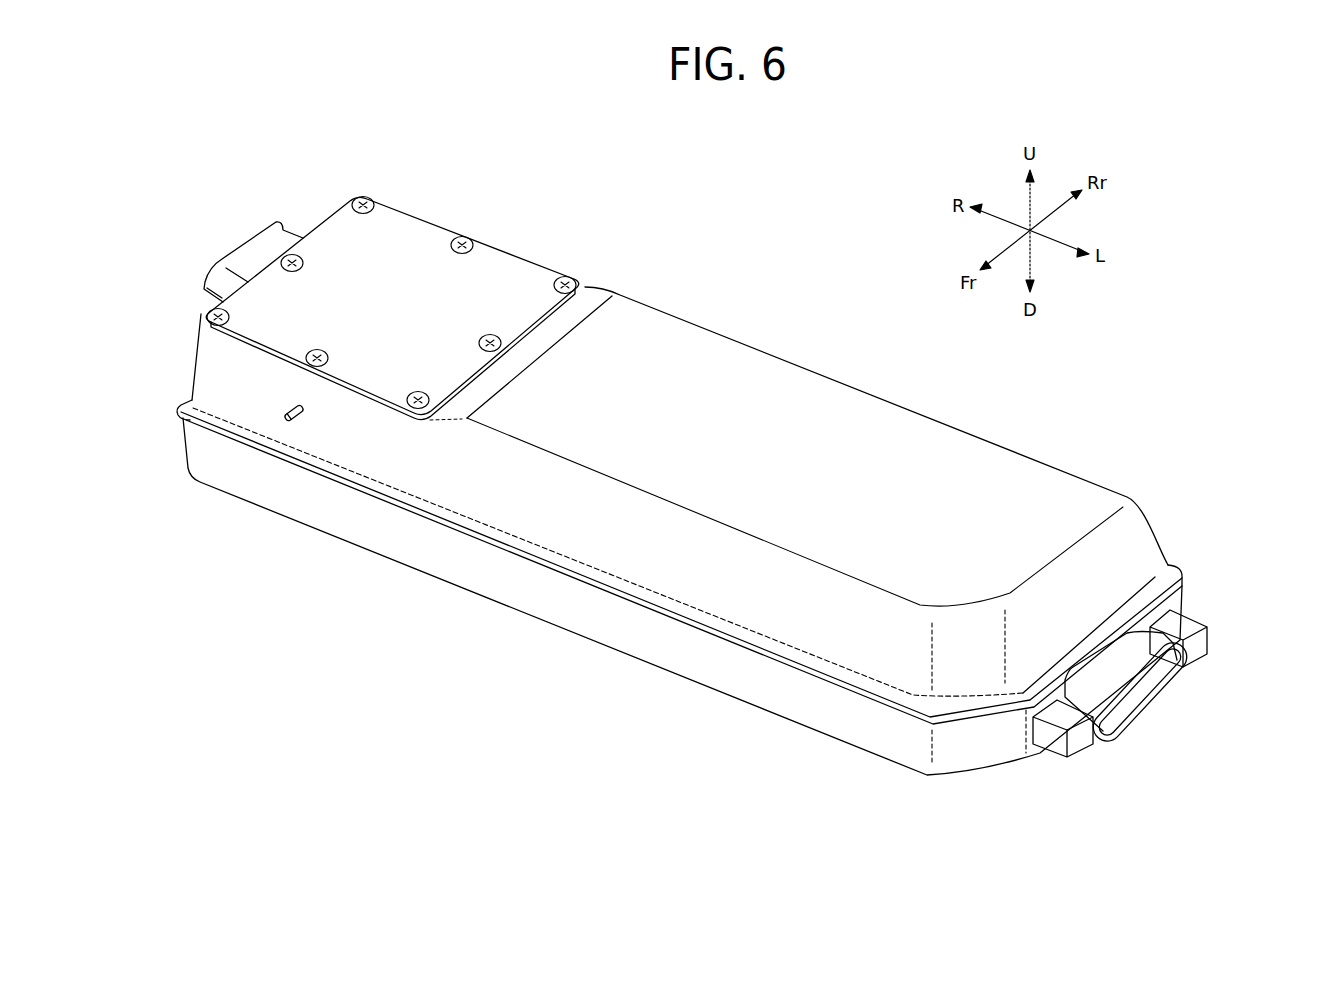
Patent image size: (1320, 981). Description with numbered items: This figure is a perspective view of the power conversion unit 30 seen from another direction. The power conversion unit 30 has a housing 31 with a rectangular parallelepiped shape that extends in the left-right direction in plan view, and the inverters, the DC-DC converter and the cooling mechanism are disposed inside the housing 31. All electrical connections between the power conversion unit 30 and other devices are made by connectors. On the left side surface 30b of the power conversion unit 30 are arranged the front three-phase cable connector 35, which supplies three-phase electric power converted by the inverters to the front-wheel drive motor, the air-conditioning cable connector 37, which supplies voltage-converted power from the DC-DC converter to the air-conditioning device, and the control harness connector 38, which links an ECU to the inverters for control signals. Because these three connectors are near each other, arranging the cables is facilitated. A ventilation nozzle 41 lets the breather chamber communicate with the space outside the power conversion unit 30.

The power conversion unit 30 is at (713, 330).
The housing 31 is at (773, 413).
The left side surface 30b is at (1113, 567).
The front three-phase cable connector 35 is at (1140, 717).
The air-conditioning cable connector 37 is at (1197, 645).
The control harness connector 38 is at (1080, 737).
The ventilation nozzle 41 is at (307, 413).